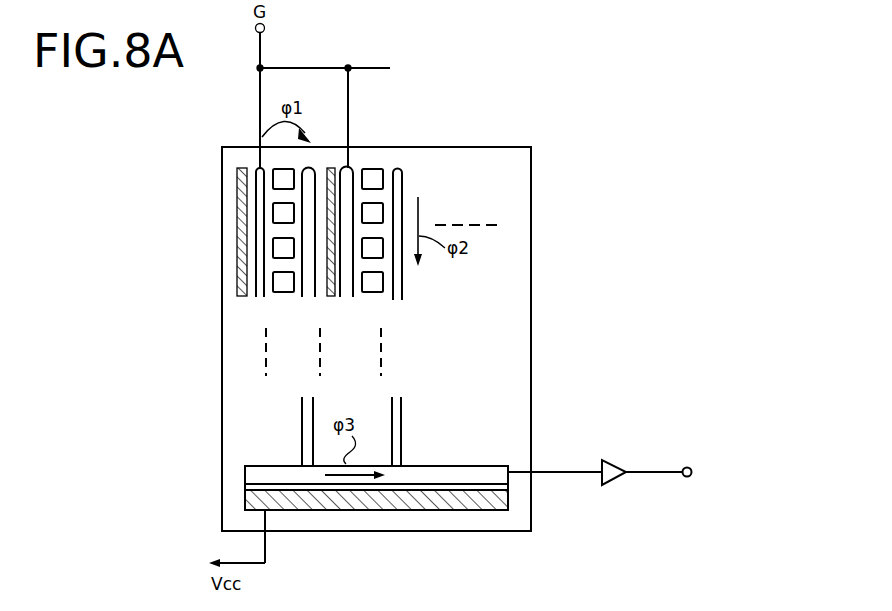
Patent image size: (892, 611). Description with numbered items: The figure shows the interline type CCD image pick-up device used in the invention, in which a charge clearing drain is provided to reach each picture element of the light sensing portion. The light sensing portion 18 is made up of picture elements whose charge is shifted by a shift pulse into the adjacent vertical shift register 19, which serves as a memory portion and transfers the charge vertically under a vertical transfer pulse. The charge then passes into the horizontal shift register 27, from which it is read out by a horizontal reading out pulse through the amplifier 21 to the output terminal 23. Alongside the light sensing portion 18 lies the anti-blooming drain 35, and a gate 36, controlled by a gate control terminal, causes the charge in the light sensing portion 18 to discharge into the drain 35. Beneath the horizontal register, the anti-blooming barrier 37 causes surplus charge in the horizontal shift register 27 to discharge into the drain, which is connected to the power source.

The light sensing portion 18 is at (283, 295).
The vertical shift register 19 is at (304, 296).
The amplifier 21 is at (610, 458).
The output terminal 23 is at (686, 466).
The horizontal shift register 27 is at (247, 476).
The anti-blooming drain 35 is at (238, 284).
The gate 36 is at (259, 298).
The anti-blooming barrier 37 is at (247, 488).